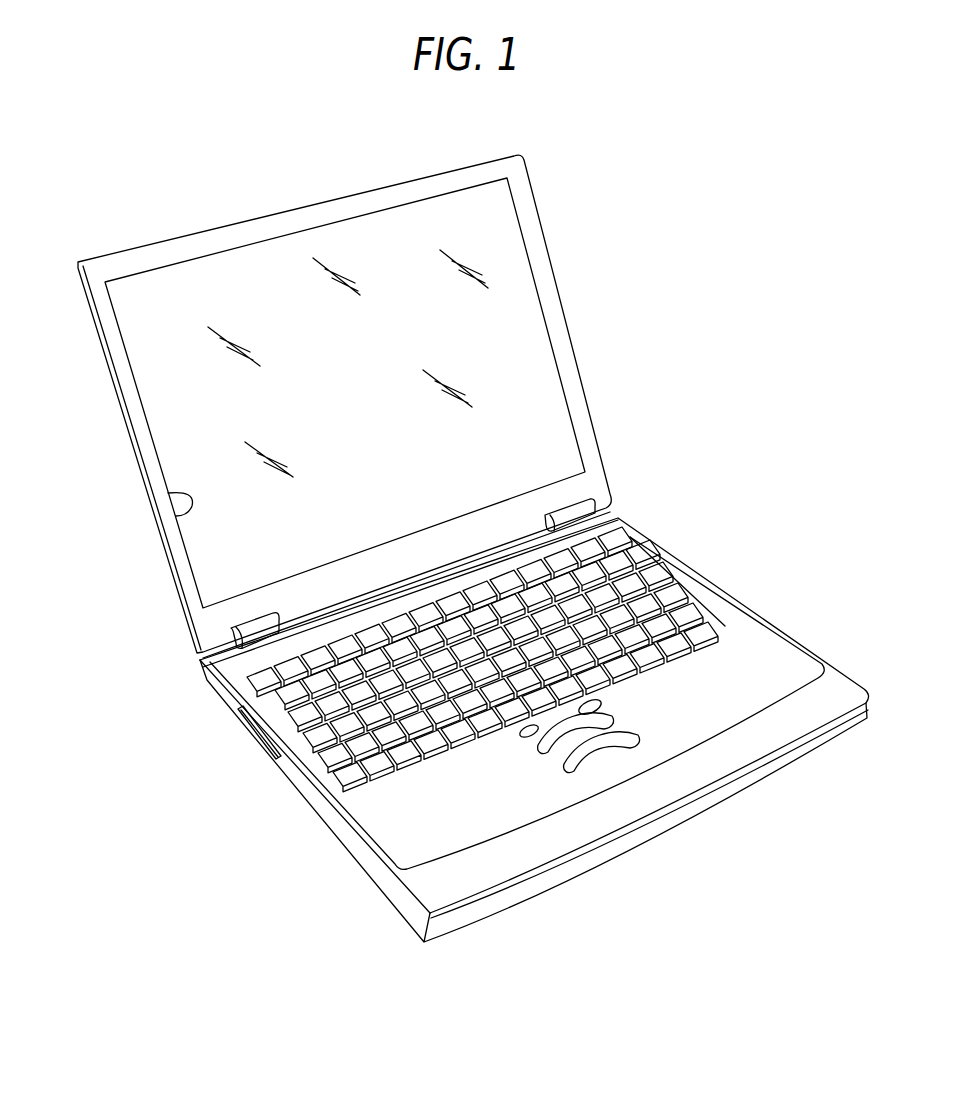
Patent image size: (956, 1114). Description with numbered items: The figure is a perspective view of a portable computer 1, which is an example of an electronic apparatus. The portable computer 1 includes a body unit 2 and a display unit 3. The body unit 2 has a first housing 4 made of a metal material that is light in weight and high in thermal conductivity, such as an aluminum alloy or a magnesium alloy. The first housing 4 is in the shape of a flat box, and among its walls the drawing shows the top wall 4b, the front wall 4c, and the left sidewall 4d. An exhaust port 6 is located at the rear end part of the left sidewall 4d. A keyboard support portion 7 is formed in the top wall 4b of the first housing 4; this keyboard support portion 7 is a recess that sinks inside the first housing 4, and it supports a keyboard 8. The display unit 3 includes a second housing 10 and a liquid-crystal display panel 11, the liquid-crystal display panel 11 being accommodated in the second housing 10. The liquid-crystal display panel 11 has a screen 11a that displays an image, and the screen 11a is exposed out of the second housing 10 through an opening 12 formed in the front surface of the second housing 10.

The portable computer 1 is at (614, 255).
The body unit 2 is at (350, 866).
The display unit 3 is at (588, 400).
The first housing 4 is at (692, 818).
The top wall 4b is at (537, 803).
The front wall 4c is at (760, 773).
The left sidewall 4d is at (318, 810).
The exhaust port 6 is at (250, 735).
The keyboard support portion 7 is at (678, 586).
The keyboard 8 is at (720, 623).
The second housing 10 is at (130, 452).
The liquid-crystal display panel 11 is at (538, 348).
The screen 11a is at (417, 380).
The opening 12 is at (170, 517).